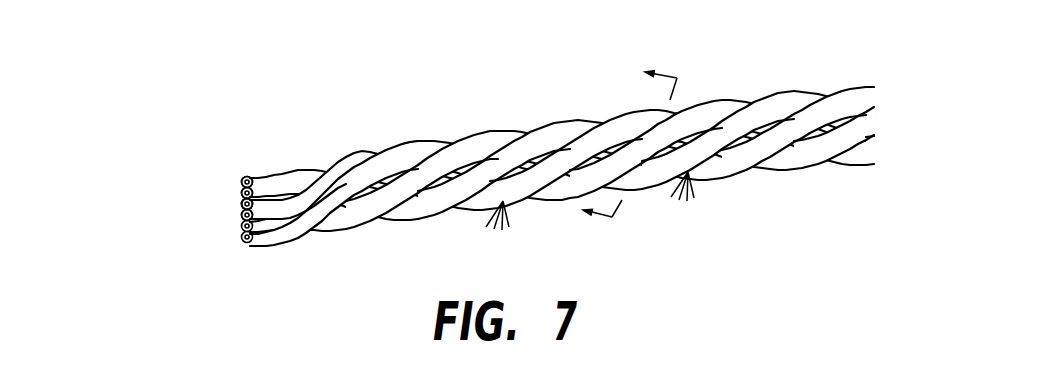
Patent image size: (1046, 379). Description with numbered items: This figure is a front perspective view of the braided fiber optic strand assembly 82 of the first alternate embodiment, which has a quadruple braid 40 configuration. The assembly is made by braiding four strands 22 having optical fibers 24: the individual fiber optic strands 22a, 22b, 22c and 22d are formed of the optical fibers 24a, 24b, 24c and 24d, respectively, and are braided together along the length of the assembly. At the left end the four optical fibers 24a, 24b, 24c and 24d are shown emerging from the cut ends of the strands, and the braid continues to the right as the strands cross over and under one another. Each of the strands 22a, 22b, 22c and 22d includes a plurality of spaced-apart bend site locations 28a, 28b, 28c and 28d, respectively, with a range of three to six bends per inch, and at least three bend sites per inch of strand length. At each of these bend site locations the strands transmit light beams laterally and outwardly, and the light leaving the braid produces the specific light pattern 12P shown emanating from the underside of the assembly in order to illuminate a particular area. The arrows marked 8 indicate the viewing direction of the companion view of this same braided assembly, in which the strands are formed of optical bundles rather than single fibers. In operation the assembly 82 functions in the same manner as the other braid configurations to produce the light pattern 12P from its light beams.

The section line for FIG. 8 is at (622, 137).
The light pattern 12P is at (518, 215).
The strands 22 is at (274, 246).
The fiber optic strand 22a is at (291, 166).
The fiber optic strand 22b is at (263, 207).
The fiber optic strand 22c is at (262, 228).
The fiber optic strand 22d is at (296, 248).
The optical fibers 24 is at (243, 245).
The optical fiber 24a is at (243, 187).
The optical fiber 24b is at (241, 199).
The optical fiber 24c is at (254, 179).
The optical fiber 24d is at (240, 210).
The bend site locations 28a is at (556, 118).
The bend site locations 28b is at (562, 147).
The bend site locations 28c is at (717, 103).
The bend site locations 28d is at (804, 90).
The quadruple braid 40 is at (460, 23).
The braided fiber optic strand assembly 82 is at (234, 204).